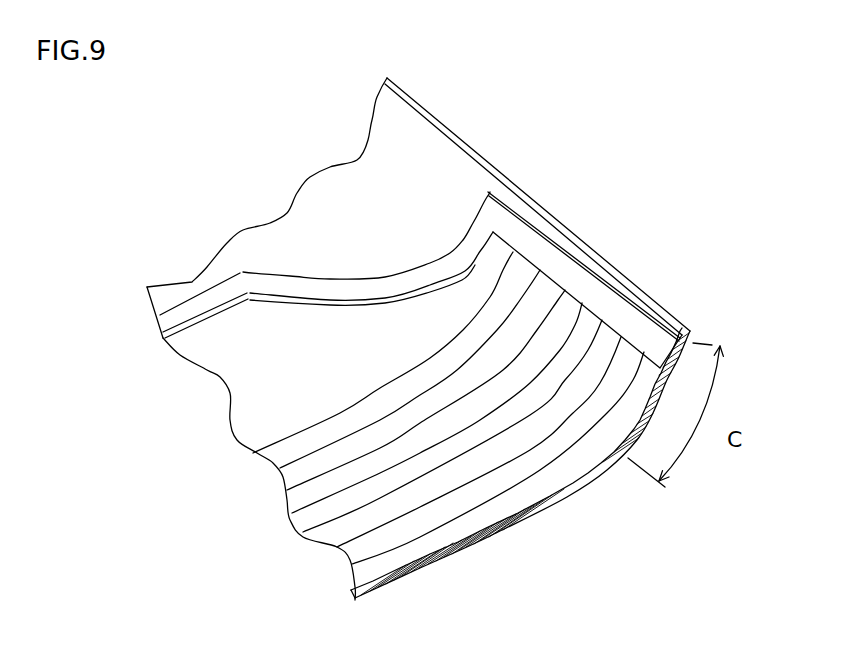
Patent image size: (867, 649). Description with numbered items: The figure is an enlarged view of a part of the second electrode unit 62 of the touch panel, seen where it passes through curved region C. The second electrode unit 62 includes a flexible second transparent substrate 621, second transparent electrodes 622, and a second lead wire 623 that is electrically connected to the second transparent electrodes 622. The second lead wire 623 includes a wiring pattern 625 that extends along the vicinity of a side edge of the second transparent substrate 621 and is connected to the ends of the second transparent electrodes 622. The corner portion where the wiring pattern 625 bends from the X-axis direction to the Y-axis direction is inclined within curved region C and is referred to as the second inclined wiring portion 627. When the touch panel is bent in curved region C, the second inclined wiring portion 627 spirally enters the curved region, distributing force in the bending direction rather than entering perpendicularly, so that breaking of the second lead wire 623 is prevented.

The second electrode unit 62 is at (601, 127).
The second transparent substrate 621 is at (265, 360).
The second transparent electrode 622 is at (343, 467).
The second lead wire 623 is at (568, 280).
The wiring pattern 625 is at (563, 223).
The second inclined wiring portion 627 is at (396, 283).